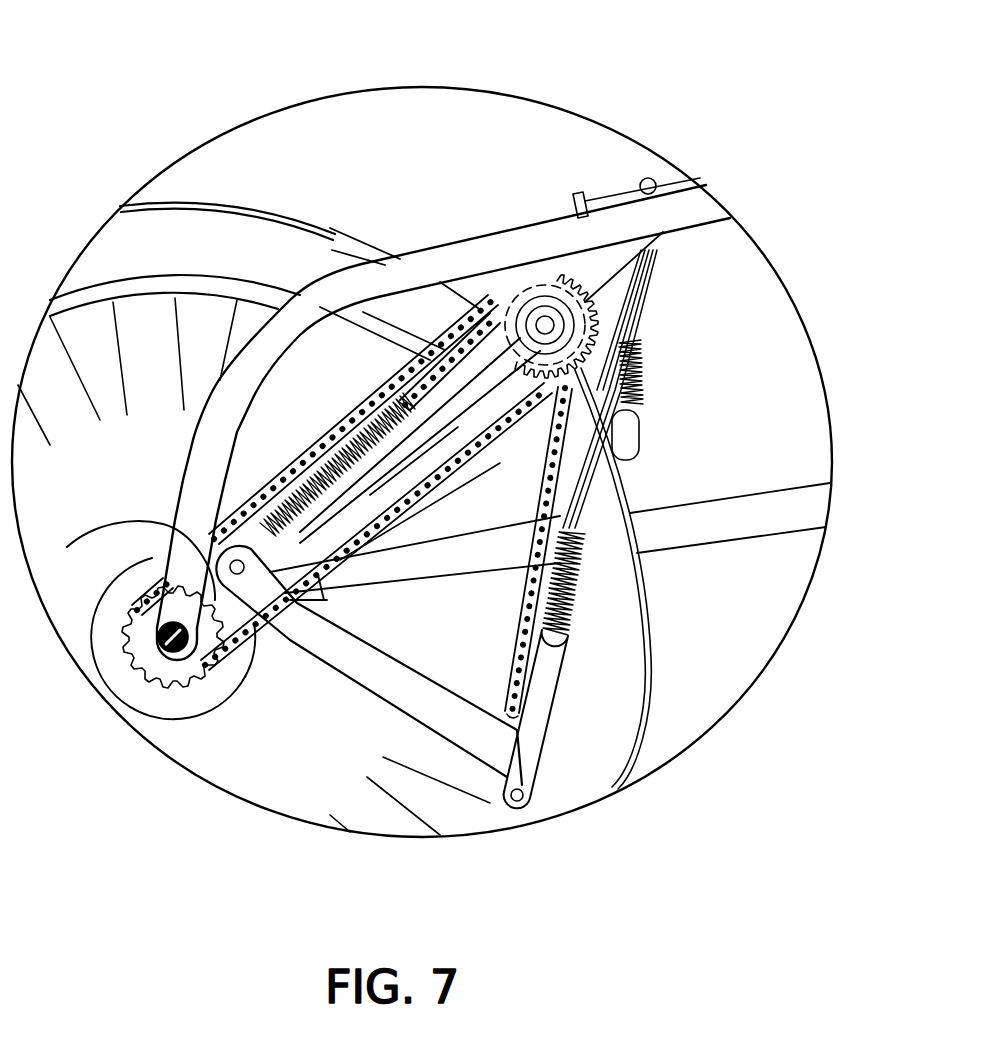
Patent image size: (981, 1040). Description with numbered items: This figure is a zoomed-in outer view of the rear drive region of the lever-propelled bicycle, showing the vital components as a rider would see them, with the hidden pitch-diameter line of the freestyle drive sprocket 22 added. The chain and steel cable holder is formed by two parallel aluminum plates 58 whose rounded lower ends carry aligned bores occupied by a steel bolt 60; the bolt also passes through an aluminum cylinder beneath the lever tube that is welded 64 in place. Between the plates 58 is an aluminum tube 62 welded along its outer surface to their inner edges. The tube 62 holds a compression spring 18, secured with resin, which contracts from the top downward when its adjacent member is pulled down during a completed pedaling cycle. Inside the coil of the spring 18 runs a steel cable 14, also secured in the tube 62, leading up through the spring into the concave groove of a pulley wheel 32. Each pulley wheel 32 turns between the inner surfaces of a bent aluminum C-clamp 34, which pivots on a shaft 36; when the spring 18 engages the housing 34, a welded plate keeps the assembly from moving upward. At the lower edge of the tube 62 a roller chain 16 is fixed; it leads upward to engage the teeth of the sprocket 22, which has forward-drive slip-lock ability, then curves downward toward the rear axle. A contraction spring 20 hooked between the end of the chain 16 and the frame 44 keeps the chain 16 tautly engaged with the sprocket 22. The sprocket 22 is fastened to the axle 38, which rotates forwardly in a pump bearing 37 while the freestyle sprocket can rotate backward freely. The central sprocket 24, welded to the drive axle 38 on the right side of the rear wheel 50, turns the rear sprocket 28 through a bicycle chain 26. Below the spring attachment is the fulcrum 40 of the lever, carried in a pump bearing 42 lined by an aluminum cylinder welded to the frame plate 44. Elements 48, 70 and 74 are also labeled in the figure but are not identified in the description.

The steel cable 14 is at (588, 497).
The roller chain 16 is at (628, 465).
The compression spring 18 is at (642, 363).
The contraction spring 20 is at (368, 400).
The freestyle drive sprocket 22 is at (496, 310).
The central sprocket 24 is at (647, 277).
The bicycle chain 26 is at (223, 685).
The rear sprocket 28 is at (152, 643).
The pulley wheel 32 is at (640, 320).
The C-clamp 34 is at (641, 305).
The shaft 36 is at (641, 180).
The pump bearing 37 is at (525, 310).
The drive axle 38 is at (547, 322).
The fulcrum 40 is at (67, 547).
The pump bearing 42 is at (202, 513).
The frame plate 44 is at (230, 513).
The swing arm strut 48 is at (343, 505).
The rear wheel 50 is at (177, 251).
The aluminum plates 58 is at (605, 745).
The steel bolt 60 is at (525, 808).
The aluminum tube 62 is at (547, 670).
The weld 64 is at (533, 805).
The dropout plate 70 is at (290, 620).
The stop post 74 is at (593, 198).